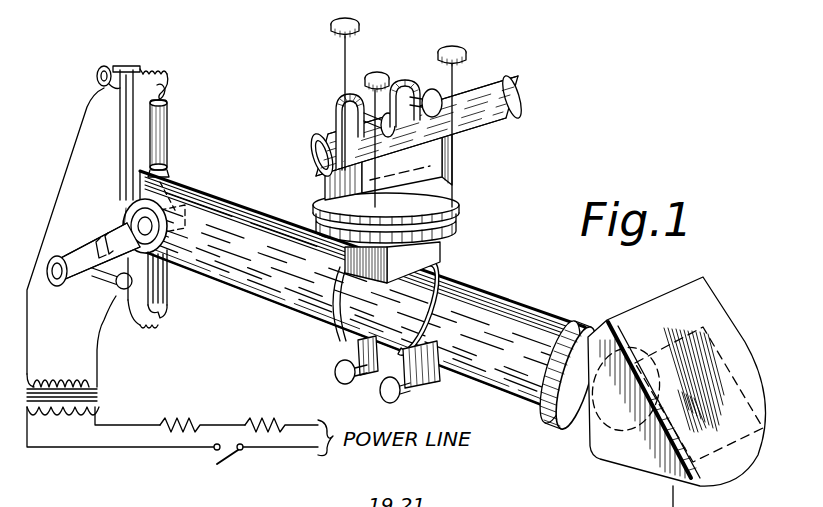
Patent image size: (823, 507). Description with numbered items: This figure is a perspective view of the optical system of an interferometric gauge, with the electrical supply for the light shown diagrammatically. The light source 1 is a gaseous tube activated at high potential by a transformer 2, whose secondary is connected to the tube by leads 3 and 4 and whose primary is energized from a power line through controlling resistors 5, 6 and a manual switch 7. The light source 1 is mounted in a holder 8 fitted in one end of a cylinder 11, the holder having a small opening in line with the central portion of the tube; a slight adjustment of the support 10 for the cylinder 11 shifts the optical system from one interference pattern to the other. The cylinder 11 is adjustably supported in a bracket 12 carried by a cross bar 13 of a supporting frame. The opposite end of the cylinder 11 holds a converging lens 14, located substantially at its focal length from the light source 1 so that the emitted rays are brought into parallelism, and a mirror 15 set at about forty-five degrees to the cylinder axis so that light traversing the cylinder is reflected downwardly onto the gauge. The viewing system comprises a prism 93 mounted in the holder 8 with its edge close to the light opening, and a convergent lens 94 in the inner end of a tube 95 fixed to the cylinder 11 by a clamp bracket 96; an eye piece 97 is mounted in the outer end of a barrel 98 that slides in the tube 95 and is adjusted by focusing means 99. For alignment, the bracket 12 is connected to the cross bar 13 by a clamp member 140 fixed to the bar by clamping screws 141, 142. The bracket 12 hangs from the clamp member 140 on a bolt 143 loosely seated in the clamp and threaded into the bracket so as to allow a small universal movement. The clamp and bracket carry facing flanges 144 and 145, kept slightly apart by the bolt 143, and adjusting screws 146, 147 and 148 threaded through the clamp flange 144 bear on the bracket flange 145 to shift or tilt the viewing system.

The light source 1 is at (167, 146).
The transformer 2 is at (98, 397).
The lead 3 is at (27, 358).
The lead 4 is at (100, 366).
The controlling resistor 5 is at (181, 422).
The controlling resistor 6 is at (263, 422).
The manual switch 7 is at (228, 460).
The holder 8 is at (124, 208).
The support 10 is at (344, 246).
The cylinder 11 is at (292, 230).
The bracket 12 is at (352, 316).
The cross bar 13 is at (516, 108).
The converging lens 14 is at (604, 423).
The mirror 15 is at (723, 358).
The prism 93 is at (190, 202).
The convergent lens 94 is at (168, 180).
The tube 95 is at (122, 230).
The clamp bracket 96 is at (124, 184).
The eye piece 97 is at (54, 262).
The barrel 98 is at (91, 272).
The focusing means 99 is at (116, 286).
The clamp member 140 is at (422, 163).
The clamping screw 141 is at (425, 133).
The clamping screw 142 is at (433, 89).
The bolt 143 is at (442, 190).
The clamp flange 144 is at (456, 215).
The bracket flange 145 is at (440, 236).
The adjusting screw 146 is at (350, 22).
The adjusting screw 147 is at (377, 72).
The adjusting screw 148 is at (462, 50).